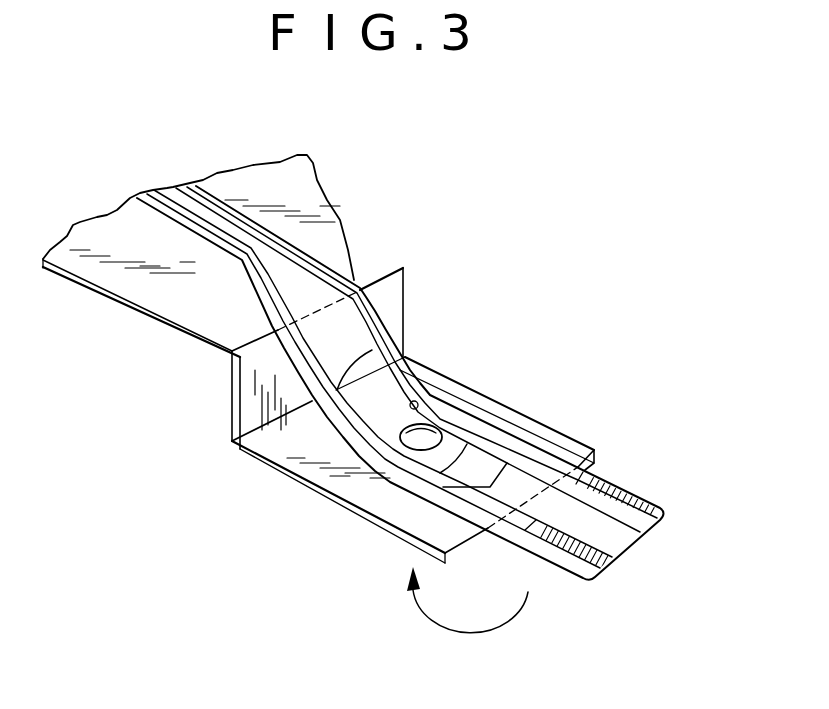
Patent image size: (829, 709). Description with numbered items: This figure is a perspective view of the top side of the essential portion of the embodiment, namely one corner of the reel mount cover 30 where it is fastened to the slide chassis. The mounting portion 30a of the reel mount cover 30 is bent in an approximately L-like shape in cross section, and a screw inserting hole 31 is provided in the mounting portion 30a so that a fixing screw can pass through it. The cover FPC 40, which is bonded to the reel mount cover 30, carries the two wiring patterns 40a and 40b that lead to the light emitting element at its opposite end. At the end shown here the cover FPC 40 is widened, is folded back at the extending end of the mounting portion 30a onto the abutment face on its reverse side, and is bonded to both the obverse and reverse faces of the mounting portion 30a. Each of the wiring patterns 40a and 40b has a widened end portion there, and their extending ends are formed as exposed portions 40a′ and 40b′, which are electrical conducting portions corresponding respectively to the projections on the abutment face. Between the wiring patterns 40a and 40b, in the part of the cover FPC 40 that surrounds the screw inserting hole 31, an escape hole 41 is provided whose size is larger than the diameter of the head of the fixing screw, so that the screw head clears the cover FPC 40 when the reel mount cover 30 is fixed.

The reel mount cover 30 is at (137, 284).
The mounting portion 30a is at (543, 440).
The screw inserting hole 31 is at (430, 430).
The cover FPC 40 is at (313, 287).
The wiring pattern 40a is at (177, 190).
The wiring pattern 40b is at (143, 192).
The exposed portion 40a′ is at (652, 531).
The exposed portion 40b′ is at (600, 574).
The escape hole 41 is at (414, 403).